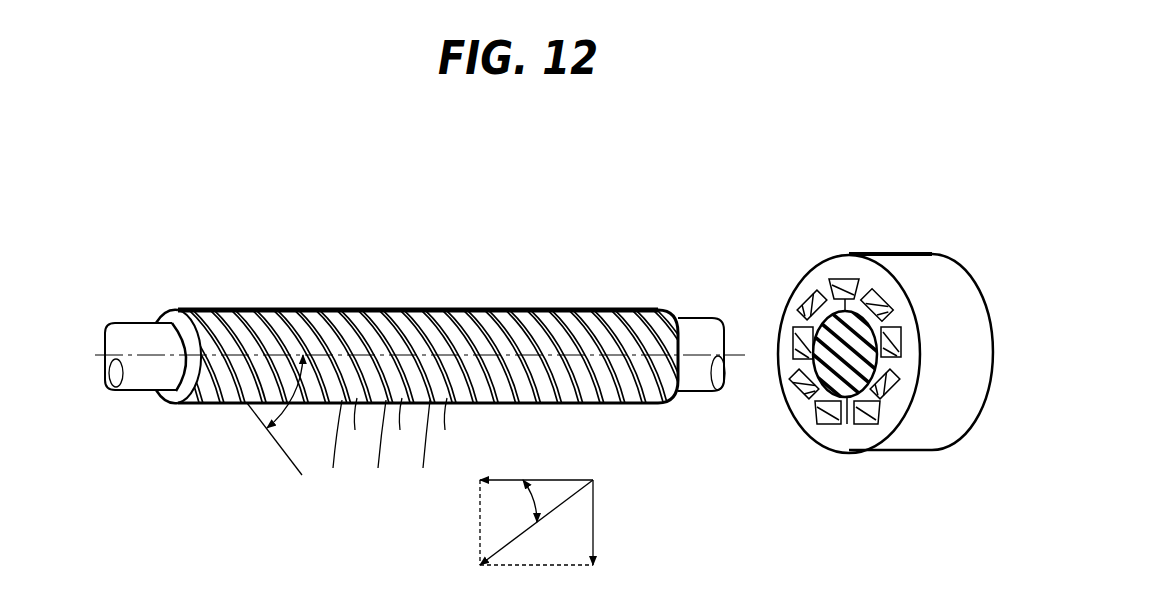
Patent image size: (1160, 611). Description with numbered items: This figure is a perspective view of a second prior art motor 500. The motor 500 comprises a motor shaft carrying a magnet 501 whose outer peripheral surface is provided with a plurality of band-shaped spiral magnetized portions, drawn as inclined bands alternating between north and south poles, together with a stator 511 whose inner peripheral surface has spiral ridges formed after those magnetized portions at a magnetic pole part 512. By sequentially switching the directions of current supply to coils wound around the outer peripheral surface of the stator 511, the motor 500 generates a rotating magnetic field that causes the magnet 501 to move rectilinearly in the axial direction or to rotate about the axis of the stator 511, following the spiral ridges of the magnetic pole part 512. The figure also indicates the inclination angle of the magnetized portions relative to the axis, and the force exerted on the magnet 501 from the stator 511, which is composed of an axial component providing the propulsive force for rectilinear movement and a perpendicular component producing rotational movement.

The motor 500 is at (588, 218).
The magnet 501 is at (423, 307).
The stator 511 is at (913, 272).
The magnetic pole part 512 is at (815, 328).